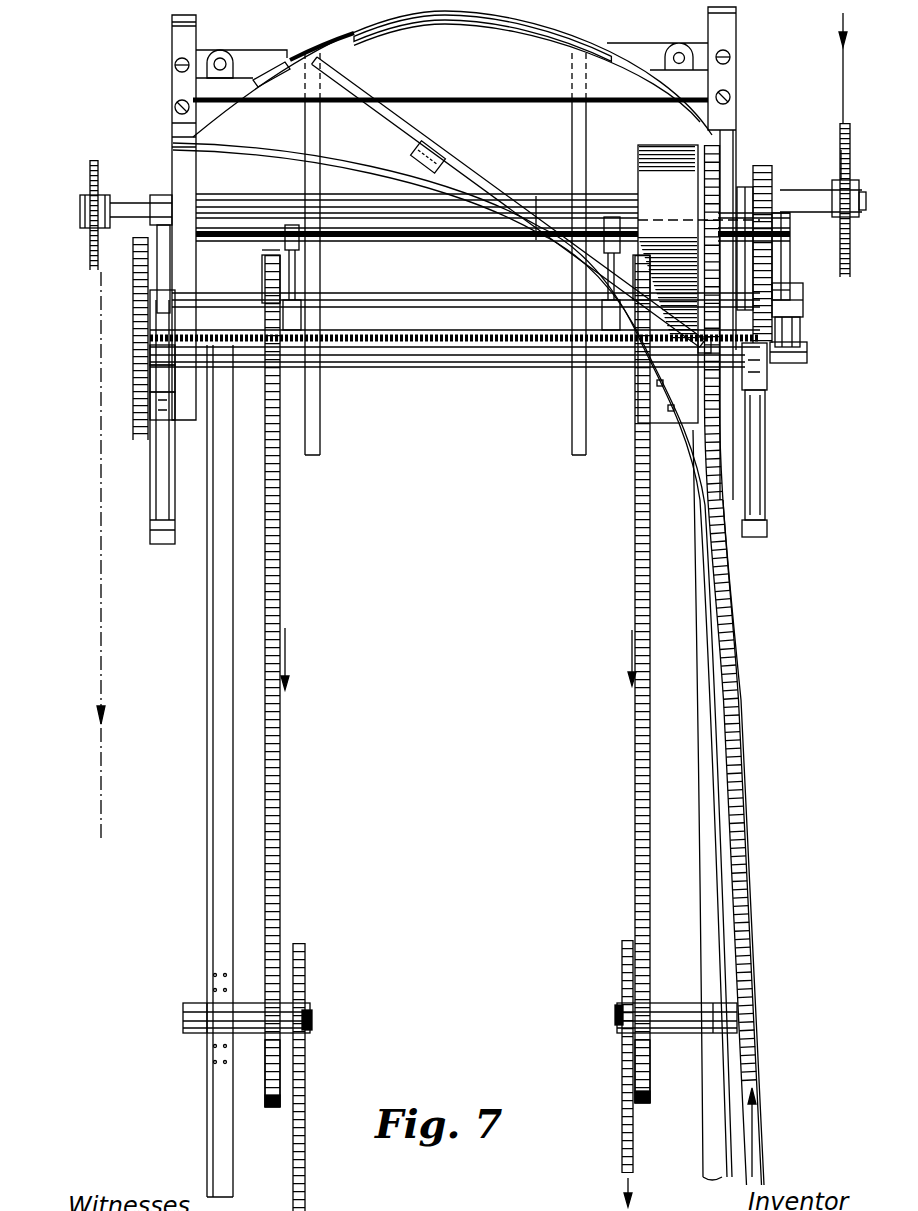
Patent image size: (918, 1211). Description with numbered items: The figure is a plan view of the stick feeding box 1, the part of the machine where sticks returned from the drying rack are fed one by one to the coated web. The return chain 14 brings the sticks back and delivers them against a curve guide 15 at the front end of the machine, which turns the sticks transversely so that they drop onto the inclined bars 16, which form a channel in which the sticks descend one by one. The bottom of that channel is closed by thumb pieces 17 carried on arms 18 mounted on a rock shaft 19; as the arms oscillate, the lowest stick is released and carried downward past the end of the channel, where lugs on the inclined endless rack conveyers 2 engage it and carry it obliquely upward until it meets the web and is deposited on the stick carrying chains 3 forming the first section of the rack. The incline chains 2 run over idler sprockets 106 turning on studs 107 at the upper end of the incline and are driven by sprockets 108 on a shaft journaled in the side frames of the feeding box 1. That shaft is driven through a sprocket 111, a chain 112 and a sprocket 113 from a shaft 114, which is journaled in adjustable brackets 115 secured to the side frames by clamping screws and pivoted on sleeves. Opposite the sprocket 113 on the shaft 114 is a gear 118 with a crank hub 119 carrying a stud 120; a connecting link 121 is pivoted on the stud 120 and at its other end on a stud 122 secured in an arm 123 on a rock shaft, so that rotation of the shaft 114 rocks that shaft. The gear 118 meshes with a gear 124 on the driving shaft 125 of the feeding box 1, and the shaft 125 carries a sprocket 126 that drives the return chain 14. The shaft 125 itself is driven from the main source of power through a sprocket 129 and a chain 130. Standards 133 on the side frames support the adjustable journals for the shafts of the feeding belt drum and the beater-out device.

The stick feeding box 1 is at (454, 602).
The endless rack conveyers 2 is at (265, 770).
The stick carrying chains 3 is at (294, 1182).
The return chain 14 is at (738, 638).
The curve guide 15 is at (345, 45).
The inclined bars 16 is at (320, 268).
The thumb pieces 17 is at (291, 332).
The arms 18 is at (262, 274).
The rock shaft 19 is at (425, 236).
The idler sprockets 106 is at (275, 1087).
The studs 107 is at (312, 1021).
The sprockets 108 is at (262, 255).
The sprocket 111 is at (133, 412).
The chain 112 is at (145, 440).
The sprocket 113 is at (133, 282).
The shaft 114 is at (462, 292).
The adjustable brackets 115 is at (160, 235).
The gear 118 is at (803, 308).
The crank hub 119 is at (788, 258).
The stud 120 is at (790, 288).
The connecting link 121 is at (802, 331).
The stud 122 is at (807, 360).
The arm 123 is at (790, 245).
The gear 124 is at (766, 168).
The driving shaft 125 is at (541, 195).
The sprocket 126 is at (703, 183).
The sprocket 129 is at (841, 150).
The chain 130 is at (841, 46).
The standards 133 is at (152, 484).